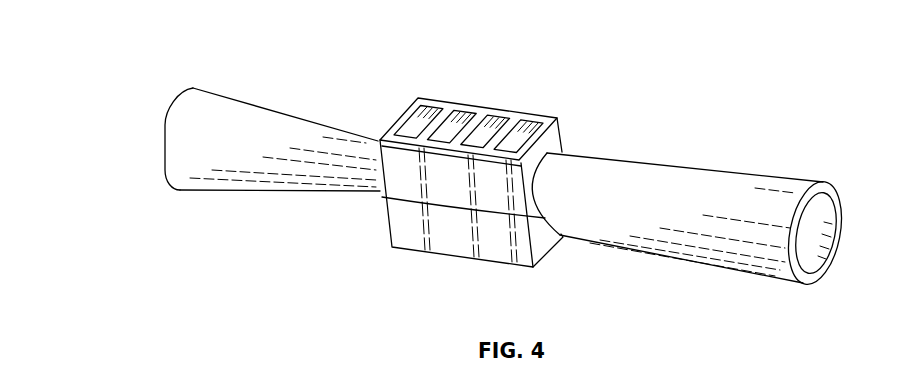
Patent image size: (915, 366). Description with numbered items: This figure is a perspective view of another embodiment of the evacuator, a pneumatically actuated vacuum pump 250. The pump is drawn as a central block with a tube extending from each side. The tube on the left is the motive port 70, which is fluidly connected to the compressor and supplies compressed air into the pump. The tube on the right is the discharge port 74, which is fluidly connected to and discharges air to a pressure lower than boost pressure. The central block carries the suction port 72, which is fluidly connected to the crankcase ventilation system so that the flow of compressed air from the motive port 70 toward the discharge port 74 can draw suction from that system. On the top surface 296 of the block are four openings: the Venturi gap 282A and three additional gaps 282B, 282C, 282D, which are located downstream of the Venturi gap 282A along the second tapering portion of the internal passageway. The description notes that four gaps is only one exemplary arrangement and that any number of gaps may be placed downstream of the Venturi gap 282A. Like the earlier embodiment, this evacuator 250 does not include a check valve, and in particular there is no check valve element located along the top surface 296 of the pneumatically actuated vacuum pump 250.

The pneumatically actuated vacuum pump 250 is at (116, 19).
The motive port 70 is at (163, 146).
The suction port 72 is at (437, 92).
The discharge port 74 is at (840, 240).
The Venturi gap 282A is at (412, 110).
The additional gap 282B is at (456, 110).
The additional gap 282C is at (488, 120).
The additional gap 282D is at (527, 122).
The top surface 296 is at (379, 138).